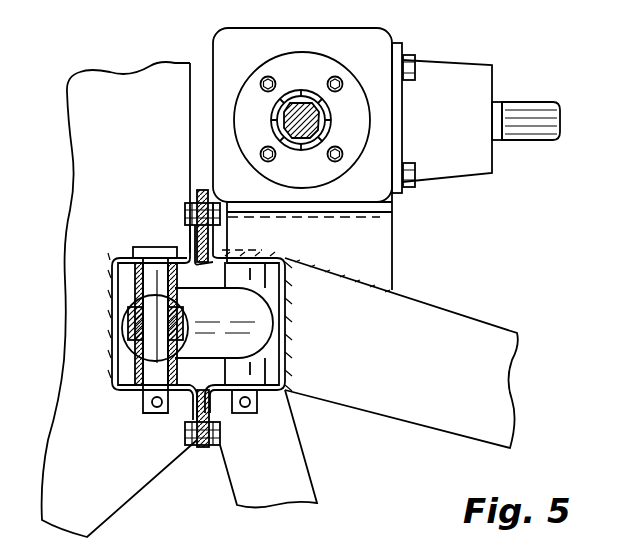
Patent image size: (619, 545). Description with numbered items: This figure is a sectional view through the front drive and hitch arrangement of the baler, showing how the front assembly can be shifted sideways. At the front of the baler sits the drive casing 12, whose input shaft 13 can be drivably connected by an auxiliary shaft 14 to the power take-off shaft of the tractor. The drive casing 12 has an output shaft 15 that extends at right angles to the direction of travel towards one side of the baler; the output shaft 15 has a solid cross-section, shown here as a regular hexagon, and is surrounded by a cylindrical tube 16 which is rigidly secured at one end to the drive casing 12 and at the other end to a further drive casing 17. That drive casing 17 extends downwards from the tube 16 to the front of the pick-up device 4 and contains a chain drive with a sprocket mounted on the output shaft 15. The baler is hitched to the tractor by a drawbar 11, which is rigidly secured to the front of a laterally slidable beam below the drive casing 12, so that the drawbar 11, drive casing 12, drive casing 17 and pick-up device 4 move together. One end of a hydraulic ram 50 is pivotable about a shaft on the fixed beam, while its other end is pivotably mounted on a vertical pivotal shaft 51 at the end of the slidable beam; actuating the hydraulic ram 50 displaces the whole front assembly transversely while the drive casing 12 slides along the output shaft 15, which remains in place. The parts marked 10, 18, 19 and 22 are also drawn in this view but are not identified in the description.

The pick-up device 4 is at (322, 497).
The clamp assembly 10 is at (108, 305).
The drawbar 11 is at (465, 325).
The drive casing 12 is at (227, 55).
The input shaft 13 is at (515, 107).
The auxiliary shaft 14 is at (290, 328).
The output shaft 15 is at (303, 112).
The cylindrical tube 16 is at (278, 92).
The drive casing 17 is at (202, 200).
The nut 18 is at (184, 213).
The pin 19 is at (150, 413).
The support plate 22 is at (95, 167).
The hydraulic ram 50 is at (248, 340).
The vertical pivotal shaft 51 is at (287, 393).